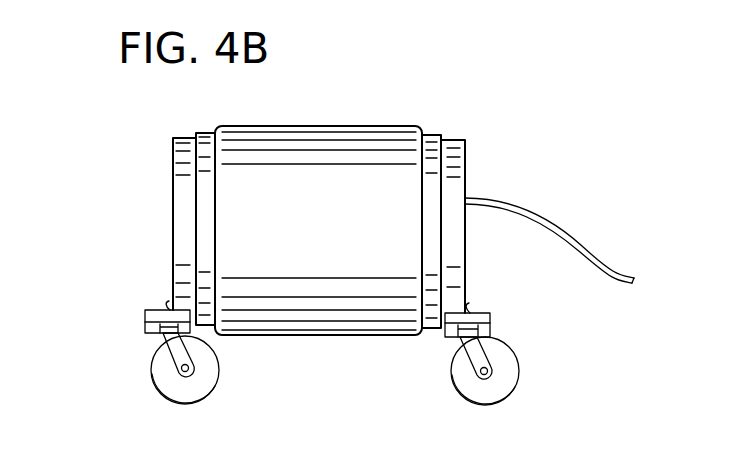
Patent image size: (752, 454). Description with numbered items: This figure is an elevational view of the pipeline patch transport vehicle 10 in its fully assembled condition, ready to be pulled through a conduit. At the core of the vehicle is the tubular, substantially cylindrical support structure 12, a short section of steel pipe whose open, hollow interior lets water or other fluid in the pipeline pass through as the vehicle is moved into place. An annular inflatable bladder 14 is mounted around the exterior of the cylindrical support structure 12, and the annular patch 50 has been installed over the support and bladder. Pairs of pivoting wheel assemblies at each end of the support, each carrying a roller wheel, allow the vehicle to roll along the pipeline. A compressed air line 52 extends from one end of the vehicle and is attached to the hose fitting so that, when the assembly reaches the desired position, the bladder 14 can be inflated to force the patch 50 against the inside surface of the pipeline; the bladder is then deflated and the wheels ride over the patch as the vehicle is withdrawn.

The pipeline patch transport vehicle 10 is at (160, 140).
The cylindrical support structure 12 is at (457, 185).
The inflatable bladder 14 is at (433, 152).
The patch 50 is at (335, 160).
The compressed air line 52 is at (555, 233).